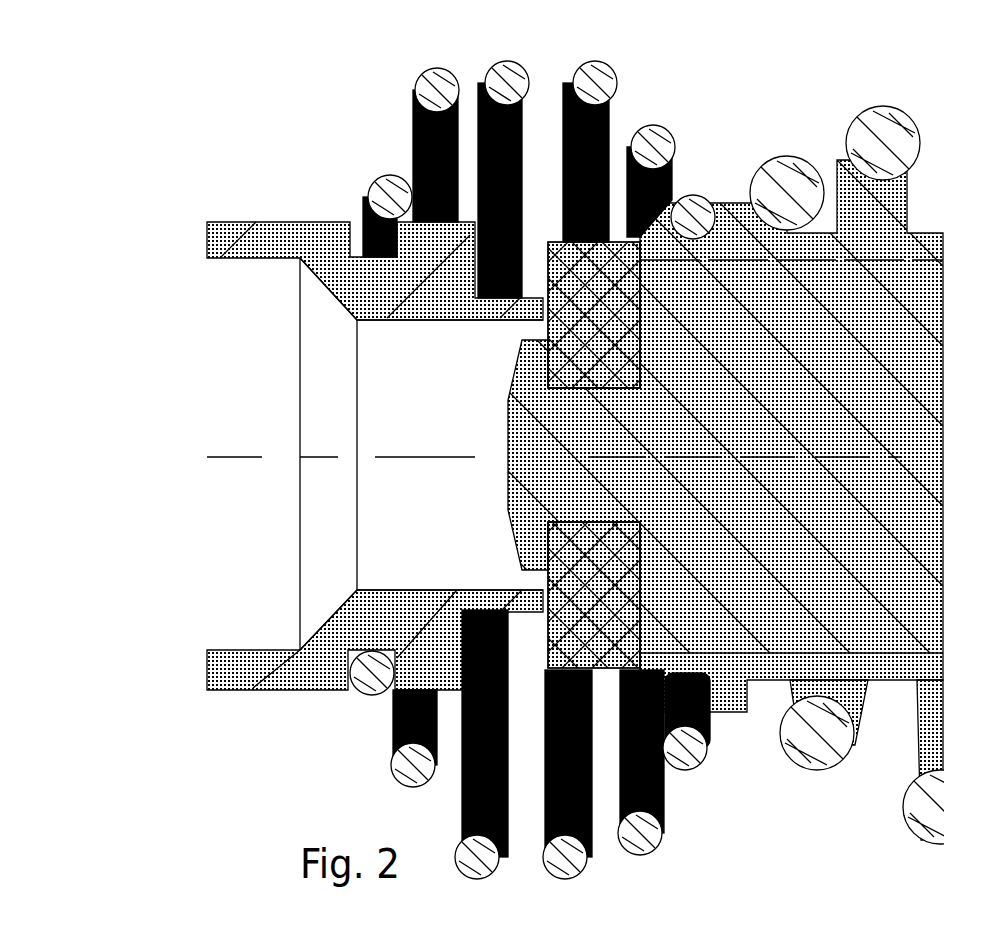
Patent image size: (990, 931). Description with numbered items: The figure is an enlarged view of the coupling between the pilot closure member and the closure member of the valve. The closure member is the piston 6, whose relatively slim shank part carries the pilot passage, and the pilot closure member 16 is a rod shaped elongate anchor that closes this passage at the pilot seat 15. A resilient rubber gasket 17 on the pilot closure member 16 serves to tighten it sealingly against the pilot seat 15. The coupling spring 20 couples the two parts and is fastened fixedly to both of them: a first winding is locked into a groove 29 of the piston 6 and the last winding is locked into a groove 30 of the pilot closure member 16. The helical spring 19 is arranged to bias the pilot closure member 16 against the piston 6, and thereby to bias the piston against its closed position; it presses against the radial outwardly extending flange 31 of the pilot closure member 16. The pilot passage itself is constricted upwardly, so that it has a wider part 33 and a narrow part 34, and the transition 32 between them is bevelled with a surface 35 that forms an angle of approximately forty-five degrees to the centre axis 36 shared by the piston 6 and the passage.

The piston 6 is at (217, 658).
The pilot seat 15 is at (553, 297).
The pilot closure member 16 is at (787, 278).
The resilient rubber gasket 17 is at (607, 275).
The helical spring 19 is at (777, 182).
The coupling spring 20 is at (392, 770).
The groove of the piston 29 is at (348, 230).
The groove of the pilot closure member 30 is at (707, 745).
The radial outwardly extending flange 31 is at (753, 700).
The transition 32 is at (318, 300).
The wider part 33 is at (237, 345).
The narrow part 34 is at (440, 388).
The bevelled surface 35 is at (322, 602).
The centre axis 36 is at (212, 452).